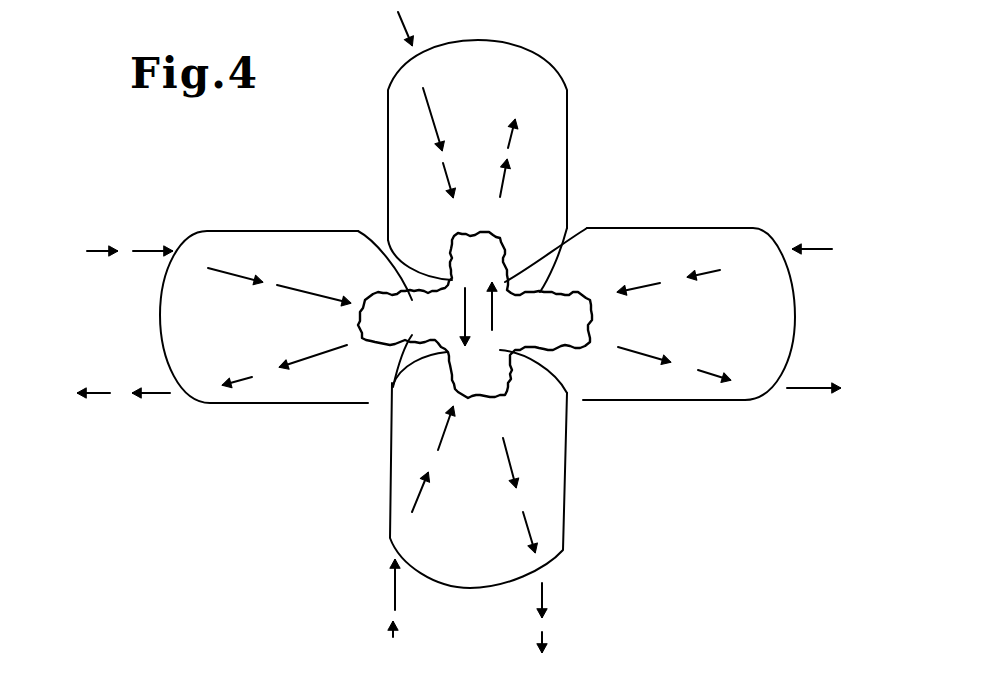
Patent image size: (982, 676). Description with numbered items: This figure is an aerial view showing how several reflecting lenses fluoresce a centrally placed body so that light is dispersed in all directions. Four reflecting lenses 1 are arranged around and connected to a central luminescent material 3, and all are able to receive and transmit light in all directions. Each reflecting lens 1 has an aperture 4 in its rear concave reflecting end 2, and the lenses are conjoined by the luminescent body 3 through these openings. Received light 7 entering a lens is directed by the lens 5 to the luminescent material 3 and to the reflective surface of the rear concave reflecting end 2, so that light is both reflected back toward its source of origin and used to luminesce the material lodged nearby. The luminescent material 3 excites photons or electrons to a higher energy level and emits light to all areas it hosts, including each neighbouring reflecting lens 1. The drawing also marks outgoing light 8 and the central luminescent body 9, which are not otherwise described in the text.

The lobe chamber 1 is at (568, 130).
The flow arrow 2 is at (575, 258).
The junction web 3 is at (447, 352).
The junction web 4 is at (452, 278).
The outer wall 5 is at (553, 62).
The inflow 7 is at (160, 240).
The outflow 8 is at (160, 405).
The central body 9 is at (547, 293).